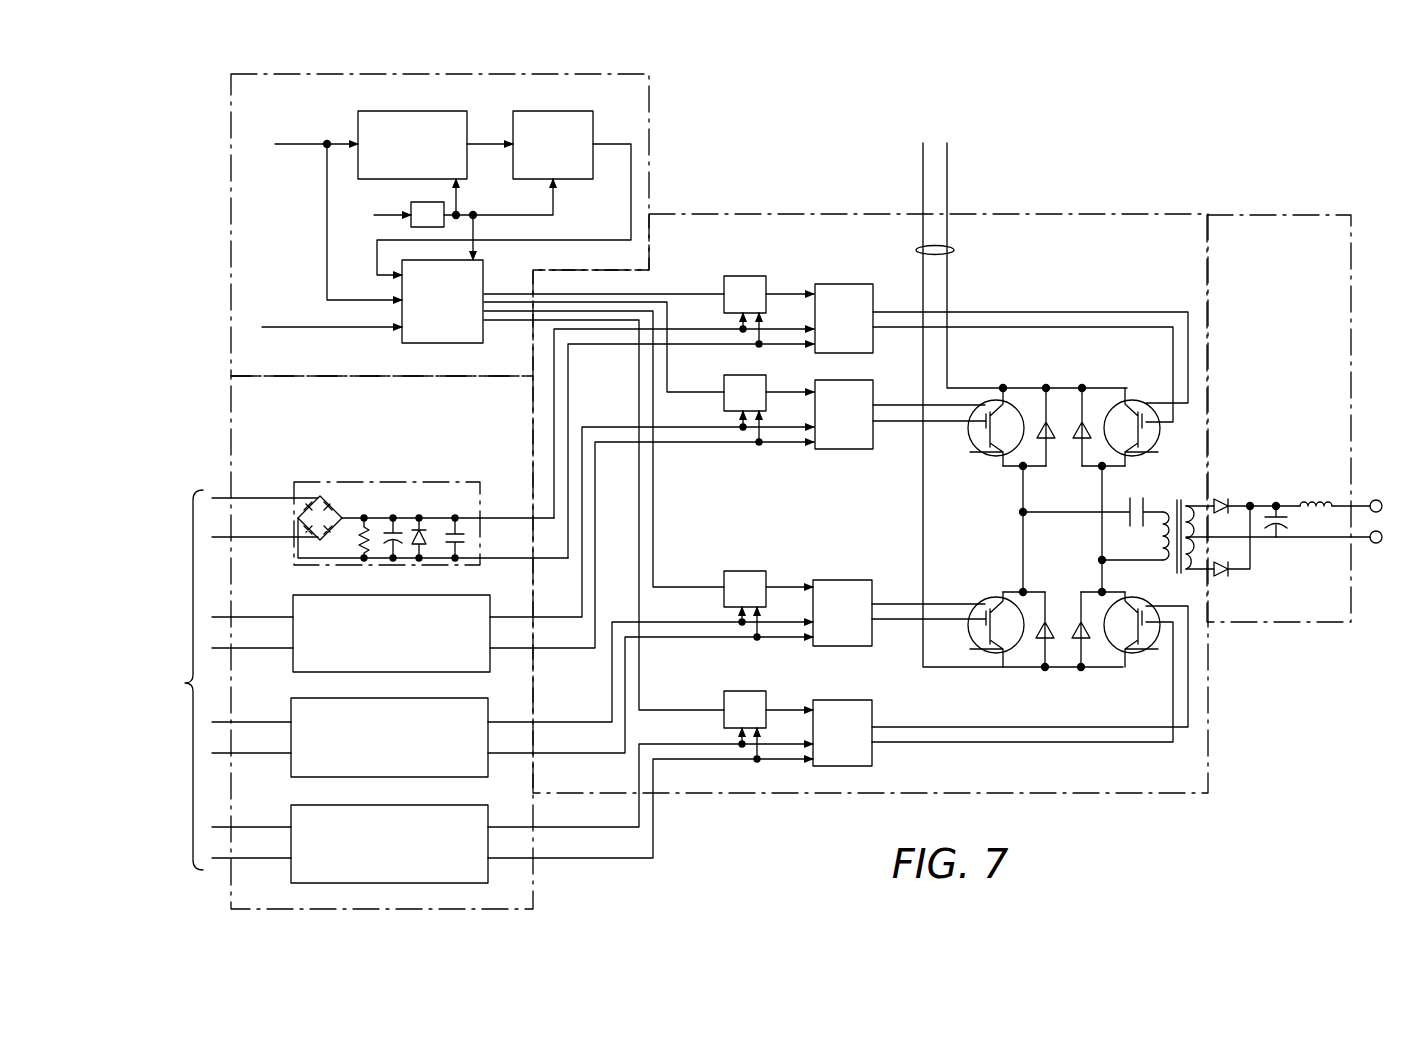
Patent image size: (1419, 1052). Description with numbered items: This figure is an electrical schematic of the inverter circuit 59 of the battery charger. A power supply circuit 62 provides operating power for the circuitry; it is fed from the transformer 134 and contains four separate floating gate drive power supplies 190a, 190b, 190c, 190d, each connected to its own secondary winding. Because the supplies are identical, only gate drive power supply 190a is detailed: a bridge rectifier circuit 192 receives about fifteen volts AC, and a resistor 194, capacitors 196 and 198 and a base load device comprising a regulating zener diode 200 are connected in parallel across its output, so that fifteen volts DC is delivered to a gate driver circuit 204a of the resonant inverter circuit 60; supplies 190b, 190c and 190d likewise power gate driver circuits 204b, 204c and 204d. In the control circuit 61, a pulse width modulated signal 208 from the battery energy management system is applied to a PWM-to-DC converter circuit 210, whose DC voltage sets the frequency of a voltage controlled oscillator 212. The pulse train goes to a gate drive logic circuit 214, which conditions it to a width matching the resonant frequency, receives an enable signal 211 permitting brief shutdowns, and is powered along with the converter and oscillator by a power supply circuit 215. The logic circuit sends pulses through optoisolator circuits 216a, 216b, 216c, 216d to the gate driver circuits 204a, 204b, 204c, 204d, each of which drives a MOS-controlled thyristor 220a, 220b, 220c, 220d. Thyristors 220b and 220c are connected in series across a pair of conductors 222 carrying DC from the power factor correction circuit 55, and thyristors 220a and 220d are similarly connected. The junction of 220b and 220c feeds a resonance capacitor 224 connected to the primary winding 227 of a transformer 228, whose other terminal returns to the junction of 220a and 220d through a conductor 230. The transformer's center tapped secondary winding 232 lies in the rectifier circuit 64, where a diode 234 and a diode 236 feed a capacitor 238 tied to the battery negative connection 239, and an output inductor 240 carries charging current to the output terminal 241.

The power factor correction circuit 55 is at (1013, 380).
The inverter circuit 59 is at (1146, 134).
The resonant inverter circuit 60 is at (1047, 214).
The control circuit 61 is at (652, 116).
The power supply circuit 62 is at (537, 893).
The rectifier circuit 64 is at (1257, 215).
The transformer 134 is at (173, 680).
The gate drive power supply 190a is at (390, 498).
The gate drive power supply 190b is at (294, 672).
The gate drive power supply 190c is at (294, 777).
The gate drive power supply 190d is at (294, 878).
The bridge rectifier circuit 192 is at (340, 468).
The resistor 194 is at (364, 526).
The capacitor 196 is at (396, 529).
The capacitor 198 is at (463, 522).
The regulating zener diode 200 is at (422, 529).
The gate driver circuit 204a is at (848, 284).
The gate driver circuit 204b is at (830, 449).
The gate driver circuit 204c is at (844, 580).
The gate driver circuit 204d is at (844, 700).
The pulse width modulated signal 208 is at (299, 151).
The PWM-to-DC converter circuit 210 is at (427, 112).
The enable signal 211 is at (318, 333).
The voltage controlled oscillator 212 is at (552, 112).
The gate drive logic circuit 214 is at (446, 346).
The power supply circuit 215 is at (411, 206).
The optoisolator circuit 216a is at (740, 276).
The optoisolator circuit 216b is at (736, 375).
The optoisolator circuit 216c is at (738, 571).
The optoisolator circuit 216d is at (738, 691).
The MOS-controlled thyristor 220a is at (1098, 378).
The MOS-controlled thyristor 220b is at (1018, 378).
The MOS-controlled thyristor 220c is at (1028, 682).
The MOS-controlled thyristor 220d is at (1114, 682).
The conductors 222 is at (954, 250).
The resonance capacitor 224 is at (1146, 498).
The primary winding 227 is at (1166, 509).
The transformer 228 is at (1148, 540).
The conductor 230 is at (1150, 561).
The center tapped secondary winding 232 is at (1183, 567).
The diode 234 is at (1220, 500).
The diode 236 is at (1226, 575).
The capacitor 238 is at (1284, 526).
The battery negative connection 239 is at (1370, 543).
The output inductor 240 is at (1310, 500).
The output terminal 241 is at (1367, 500).